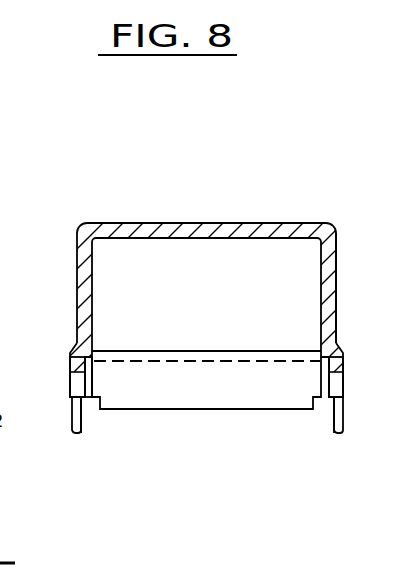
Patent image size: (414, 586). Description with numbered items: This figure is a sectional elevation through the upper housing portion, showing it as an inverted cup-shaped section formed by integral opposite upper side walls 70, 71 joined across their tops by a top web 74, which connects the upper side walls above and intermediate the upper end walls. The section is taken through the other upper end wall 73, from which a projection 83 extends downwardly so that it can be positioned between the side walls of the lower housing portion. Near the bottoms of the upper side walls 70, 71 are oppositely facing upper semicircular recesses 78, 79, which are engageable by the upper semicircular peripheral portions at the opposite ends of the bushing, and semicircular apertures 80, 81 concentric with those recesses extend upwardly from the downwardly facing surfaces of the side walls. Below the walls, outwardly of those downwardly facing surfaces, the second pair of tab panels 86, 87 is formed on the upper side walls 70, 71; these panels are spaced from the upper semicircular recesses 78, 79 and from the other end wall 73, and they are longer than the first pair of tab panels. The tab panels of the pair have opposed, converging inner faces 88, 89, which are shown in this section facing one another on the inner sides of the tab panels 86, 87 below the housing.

The upper side wall 70 is at (77, 318).
The upper side wall 71 is at (336, 300).
The upper end wall 73 is at (223, 391).
The top web 74 is at (212, 223).
The upper semicircular recess 78 is at (87, 370).
The upper semicircular recess 79 is at (326, 364).
The semicircular aperture 80 is at (79, 375).
The semicircular aperture 81 is at (344, 376).
The projection 83 is at (217, 410).
The tab panel 86 is at (72, 403).
The tab panel 87 is at (343, 418).
The inner face 88 is at (83, 413).
The inner face 89 is at (332, 412).